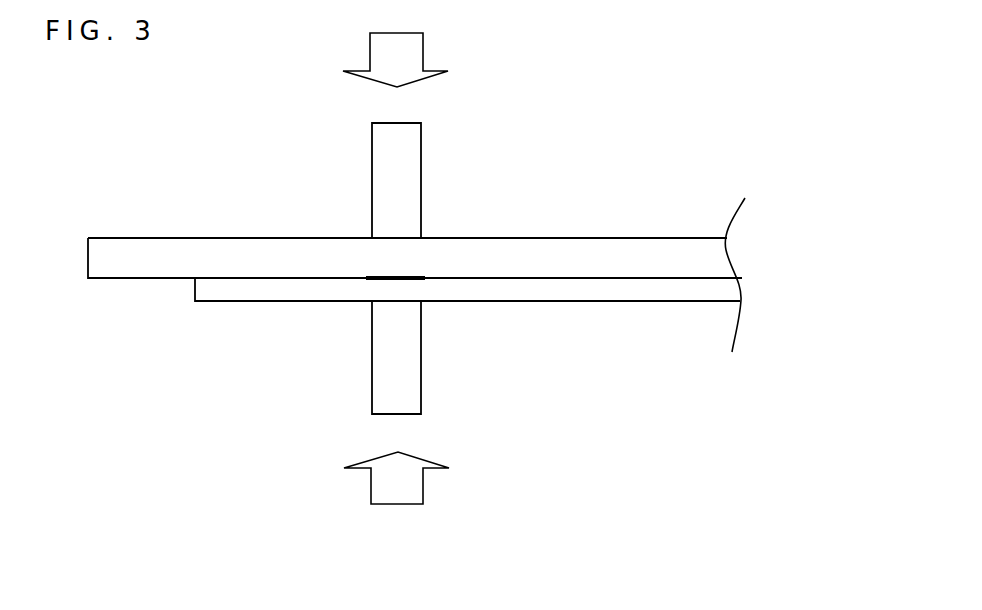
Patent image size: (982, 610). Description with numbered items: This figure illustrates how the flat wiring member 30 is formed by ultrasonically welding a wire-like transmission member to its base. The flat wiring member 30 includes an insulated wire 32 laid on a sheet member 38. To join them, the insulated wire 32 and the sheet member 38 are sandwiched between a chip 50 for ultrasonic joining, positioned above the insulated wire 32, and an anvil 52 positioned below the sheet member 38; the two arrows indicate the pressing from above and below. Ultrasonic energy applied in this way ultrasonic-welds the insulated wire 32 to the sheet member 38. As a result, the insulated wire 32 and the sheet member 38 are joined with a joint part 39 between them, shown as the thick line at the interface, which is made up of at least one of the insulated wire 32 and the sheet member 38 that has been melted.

The flat wiring member 30 is at (662, 232).
The insulated wire 32 is at (576, 236).
The sheet member 38 is at (612, 301).
The joint part 39 is at (418, 277).
The chip 50 is at (421, 158).
The anvil 52 is at (421, 368).